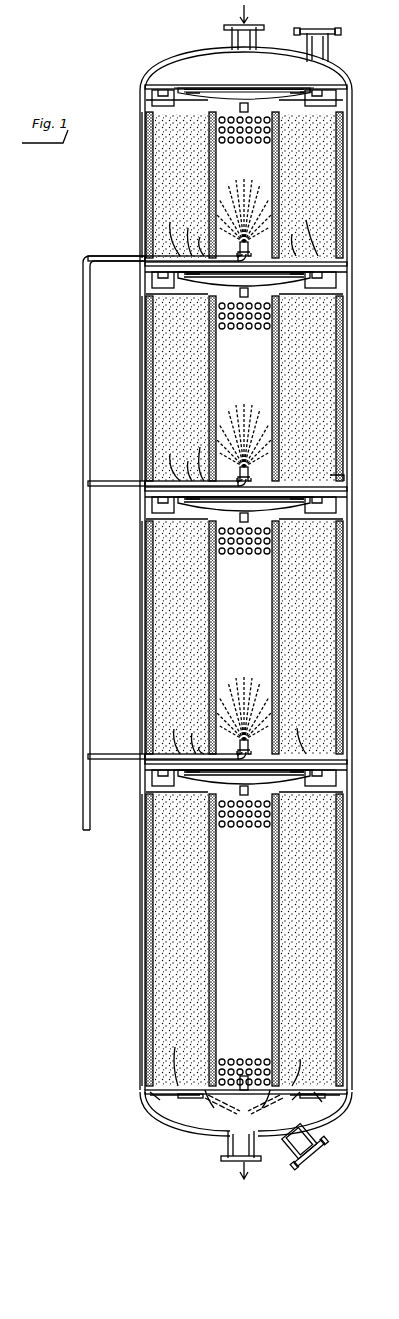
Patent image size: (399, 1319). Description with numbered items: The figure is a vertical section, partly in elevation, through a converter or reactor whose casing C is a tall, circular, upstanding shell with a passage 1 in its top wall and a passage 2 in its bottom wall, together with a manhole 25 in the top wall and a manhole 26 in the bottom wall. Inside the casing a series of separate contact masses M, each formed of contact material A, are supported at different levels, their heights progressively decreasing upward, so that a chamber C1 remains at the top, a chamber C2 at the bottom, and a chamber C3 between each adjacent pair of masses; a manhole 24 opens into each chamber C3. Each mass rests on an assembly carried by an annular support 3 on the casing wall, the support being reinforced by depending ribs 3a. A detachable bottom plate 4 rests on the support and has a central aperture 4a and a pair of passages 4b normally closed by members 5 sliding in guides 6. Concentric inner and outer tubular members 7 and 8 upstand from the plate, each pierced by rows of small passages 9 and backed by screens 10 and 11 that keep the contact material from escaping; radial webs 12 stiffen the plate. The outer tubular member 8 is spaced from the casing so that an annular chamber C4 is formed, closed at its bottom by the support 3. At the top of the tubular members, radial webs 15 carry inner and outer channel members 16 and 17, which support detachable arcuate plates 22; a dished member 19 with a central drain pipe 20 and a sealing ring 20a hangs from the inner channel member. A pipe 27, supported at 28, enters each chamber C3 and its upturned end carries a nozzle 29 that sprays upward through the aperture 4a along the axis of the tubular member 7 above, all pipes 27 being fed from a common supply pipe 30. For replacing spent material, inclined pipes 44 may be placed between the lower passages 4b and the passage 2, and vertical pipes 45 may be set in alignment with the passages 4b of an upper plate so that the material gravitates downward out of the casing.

The passage 1 is at (262, 42).
The passage 2 is at (226, 1156).
The annular support 3 is at (145, 252).
The depending ribs 3a is at (145, 1096).
The bottom plate 4 is at (344, 470).
The central circular aperture 4a is at (240, 250).
The transversely alined passages 4b is at (266, 646).
The closure member 5 is at (274, 663).
The track or guide arrangement 6 is at (227, 668).
The inner tubular member 7 is at (216, 186).
The outer tubular member 8 is at (143, 186).
The small passages 9 is at (146, 201).
The screen 10 is at (274, 172).
The screen 11 is at (148, 170).
The webs or ribs 12 is at (344, 232).
The webs or ribs 15 is at (150, 105).
The inner channel member 16 is at (305, 88).
The outer channel member 17 is at (146, 90).
The dished member 19 is at (278, 98).
The drain pipe 20 is at (258, 100).
The ring 20a is at (240, 98).
The arcuate plates 22 is at (202, 90).
The manhole 24 is at (254, 260).
The manhole 25 is at (332, 50).
The manhole 26 is at (328, 1144).
The pipe or conduit 27 is at (110, 258).
The support 28 is at (148, 286).
The nozzle or atomizer 29 is at (250, 244).
The common supply pipe 30 is at (80, 446).
The inclined pipes 44 is at (198, 1112).
The vertical pipes 45 is at (343, 292).
The contact material A is at (154, 145).
The contact mass M is at (326, 219).
The casing C is at (352, 618).
The top chamber C1 is at (340, 78).
The bottom chamber C2 is at (340, 1108).
The intermediate chamber C3 is at (352, 268).
The annular chamber C4 is at (142, 236).